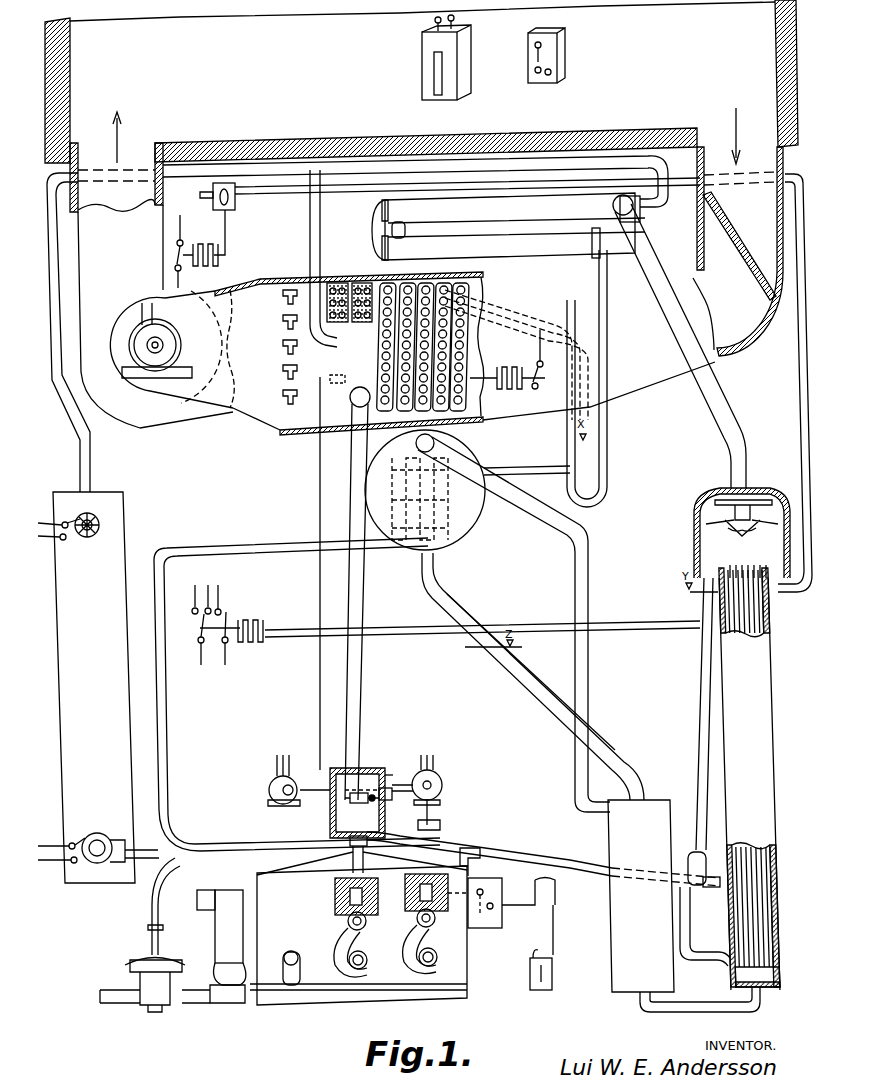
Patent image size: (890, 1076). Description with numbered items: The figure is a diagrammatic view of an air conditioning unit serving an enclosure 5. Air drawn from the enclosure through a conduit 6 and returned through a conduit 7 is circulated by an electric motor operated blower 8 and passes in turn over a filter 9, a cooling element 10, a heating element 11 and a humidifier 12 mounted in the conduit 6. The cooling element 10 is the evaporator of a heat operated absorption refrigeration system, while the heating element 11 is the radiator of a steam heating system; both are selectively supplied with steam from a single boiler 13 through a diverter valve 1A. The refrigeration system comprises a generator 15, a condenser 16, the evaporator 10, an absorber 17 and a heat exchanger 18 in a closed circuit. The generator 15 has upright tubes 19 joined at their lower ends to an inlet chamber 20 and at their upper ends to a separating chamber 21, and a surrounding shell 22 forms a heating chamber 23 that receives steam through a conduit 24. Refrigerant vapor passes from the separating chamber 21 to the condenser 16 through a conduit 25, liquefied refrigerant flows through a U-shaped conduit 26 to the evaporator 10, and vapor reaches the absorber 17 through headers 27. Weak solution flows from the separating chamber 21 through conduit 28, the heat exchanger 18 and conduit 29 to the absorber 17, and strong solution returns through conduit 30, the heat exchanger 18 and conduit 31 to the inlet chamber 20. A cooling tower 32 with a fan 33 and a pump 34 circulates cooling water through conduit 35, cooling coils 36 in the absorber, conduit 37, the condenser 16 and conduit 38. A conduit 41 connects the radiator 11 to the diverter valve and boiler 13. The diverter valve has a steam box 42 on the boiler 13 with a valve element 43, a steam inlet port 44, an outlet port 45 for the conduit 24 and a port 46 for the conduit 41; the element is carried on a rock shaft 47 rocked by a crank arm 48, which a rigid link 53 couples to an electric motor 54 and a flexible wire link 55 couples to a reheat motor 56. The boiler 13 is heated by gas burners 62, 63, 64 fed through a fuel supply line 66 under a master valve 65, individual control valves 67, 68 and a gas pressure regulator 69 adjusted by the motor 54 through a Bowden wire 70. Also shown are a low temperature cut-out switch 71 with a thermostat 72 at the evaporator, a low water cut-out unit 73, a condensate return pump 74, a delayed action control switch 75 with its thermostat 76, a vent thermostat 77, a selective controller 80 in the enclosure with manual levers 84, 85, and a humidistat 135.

The enclosure 5 is at (421, 145).
The conduit 6 is at (735, 342).
The conduit 7 is at (158, 217).
The blower 8 is at (166, 417).
The filter 9 is at (728, 250).
The cooling element 10 is at (445, 306).
The heating element 11 is at (343, 283).
The humidifier 12 is at (276, 286).
The boiler 13 is at (258, 872).
The float valve 1A is at (380, 770).
The generator 15 is at (780, 651).
The condenser 16 is at (431, 208).
The absorber 17 is at (483, 515).
The heat exchanger 18 is at (648, 800).
The upright tubes 19 is at (770, 855).
The inlet chamber 20 is at (768, 975).
The separating chamber 21 is at (755, 497).
The shell 22 is at (770, 775).
The heating chamber 23 is at (766, 885).
The conduit 24 is at (533, 855).
The conduit 25 is at (690, 330).
The U-shaped conduit 26 is at (585, 420).
The passages or headers 27 is at (450, 440).
The conduit 28 is at (703, 633).
The conduit 29 is at (590, 683).
The conduit 30 is at (462, 600).
The conduit 31 is at (720, 1005).
The cooling tower 32 is at (125, 530).
The fan 33 is at (96, 515).
The pump 34 is at (103, 835).
The conduit 35 is at (165, 727).
The cooling coils 36 is at (410, 499).
The conduit 37 is at (610, 430).
The conduit 38 is at (82, 440).
The conduit 41 is at (350, 590).
The steam box 42 is at (338, 768).
The valve element 43 is at (338, 822).
The steam inlet port 44 is at (353, 850).
The outlet port 45 is at (350, 803).
The port 46 is at (262, 618).
The rock shaft 47 is at (392, 796).
The crank arm 48 is at (372, 770).
The rigid link 53 is at (398, 780).
The electric motor 54 is at (438, 773).
The flexible wire link 55 is at (323, 775).
The reheat motor 56 is at (270, 783).
The gas burner 62 is at (296, 955).
The gas burner 63 is at (366, 960).
The gas burner 64 is at (436, 960).
The master valve 65 is at (228, 1003).
The fuel supply line 66 is at (122, 1003).
The control valve 67 is at (338, 887).
The control valve 68 is at (407, 880).
The gas pressure regulator 69 is at (170, 1008).
The Bowden wire 70 is at (196, 850).
The low temperature cut-out switch 71 is at (540, 390).
The thermostat 72 is at (290, 290).
The low water cut-out unit 73 is at (500, 893).
The condensate return pump 74 is at (545, 985).
The delayed action control switch 75 is at (213, 592).
The thermostat 76 is at (186, 242).
The thermostat 77 is at (185, 288).
The selective controller 80 is at (472, 70).
The manually operable lever 84 is at (433, 21).
The lever 85 is at (456, 18).
The humidistat 135 is at (576, 43).